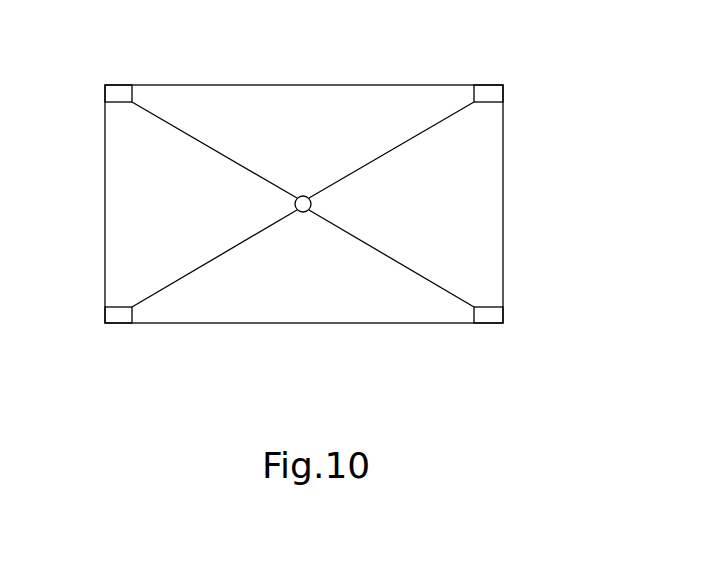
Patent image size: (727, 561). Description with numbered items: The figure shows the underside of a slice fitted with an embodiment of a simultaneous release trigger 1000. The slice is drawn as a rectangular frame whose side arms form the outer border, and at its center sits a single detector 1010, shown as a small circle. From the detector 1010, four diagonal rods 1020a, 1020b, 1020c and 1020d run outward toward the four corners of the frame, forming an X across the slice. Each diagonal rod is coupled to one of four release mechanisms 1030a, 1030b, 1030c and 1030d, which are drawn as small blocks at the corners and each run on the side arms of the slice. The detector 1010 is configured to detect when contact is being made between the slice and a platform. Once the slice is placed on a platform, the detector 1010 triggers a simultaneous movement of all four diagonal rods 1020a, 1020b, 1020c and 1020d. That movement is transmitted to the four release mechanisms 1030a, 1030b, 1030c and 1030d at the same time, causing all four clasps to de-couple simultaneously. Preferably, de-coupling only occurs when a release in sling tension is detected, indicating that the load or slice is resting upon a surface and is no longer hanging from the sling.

The simultaneous release trigger 1000 is at (550, 135).
The detector 1010 is at (306, 196).
The diagonal rod 1020a is at (420, 245).
The diagonal rod 1020b is at (218, 256).
The diagonal rod 1020c is at (218, 153).
The diagonal rod 1020d is at (425, 165).
The release mechanism 1030a is at (492, 320).
The release mechanism 1030b is at (117, 320).
The release mechanism 1030c is at (117, 90).
The release mechanism 1030d is at (525, 72).